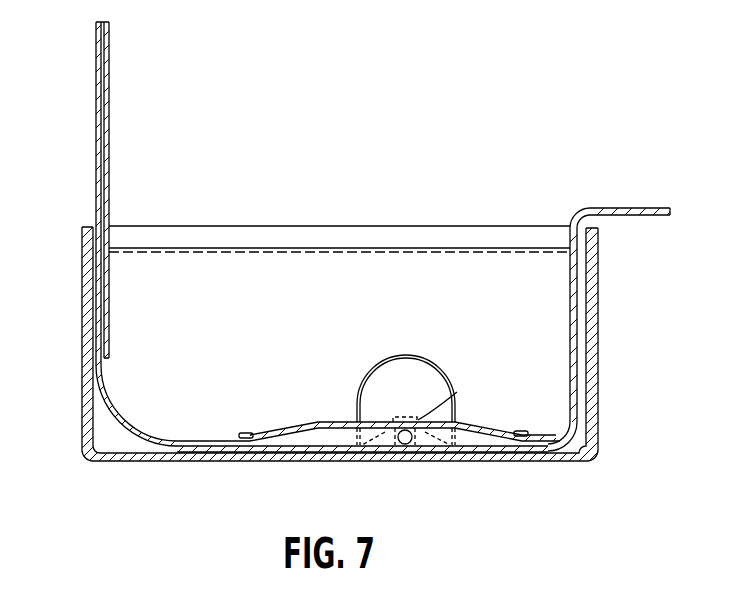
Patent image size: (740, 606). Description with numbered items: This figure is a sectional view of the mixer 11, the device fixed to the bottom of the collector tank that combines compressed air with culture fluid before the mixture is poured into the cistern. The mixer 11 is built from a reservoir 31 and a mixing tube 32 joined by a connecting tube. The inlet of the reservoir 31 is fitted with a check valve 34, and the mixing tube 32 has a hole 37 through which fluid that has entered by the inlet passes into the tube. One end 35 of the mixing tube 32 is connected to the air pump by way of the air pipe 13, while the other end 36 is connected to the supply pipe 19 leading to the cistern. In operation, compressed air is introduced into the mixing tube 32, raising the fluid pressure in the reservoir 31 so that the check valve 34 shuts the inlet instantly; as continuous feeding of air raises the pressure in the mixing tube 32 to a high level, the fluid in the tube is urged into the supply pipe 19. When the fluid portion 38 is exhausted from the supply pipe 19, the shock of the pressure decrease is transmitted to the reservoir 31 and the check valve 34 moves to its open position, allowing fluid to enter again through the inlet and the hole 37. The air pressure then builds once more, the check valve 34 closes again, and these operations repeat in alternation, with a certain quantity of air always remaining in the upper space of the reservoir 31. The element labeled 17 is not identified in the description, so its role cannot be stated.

The mixer 11 is at (488, 227).
The air pipe 13 is at (580, 322).
The heating unit 17 is at (439, 406).
The supply pipe 19 is at (110, 172).
The reservoir 31 is at (410, 358).
The mixing tube 32 is at (312, 422).
The check valve 34 is at (457, 392).
The one end of the mixing tube 35 is at (520, 447).
The other end of the mixing tube 36 is at (242, 447).
The hole 37 is at (412, 444).
The fluid portion 38 is at (104, 77).